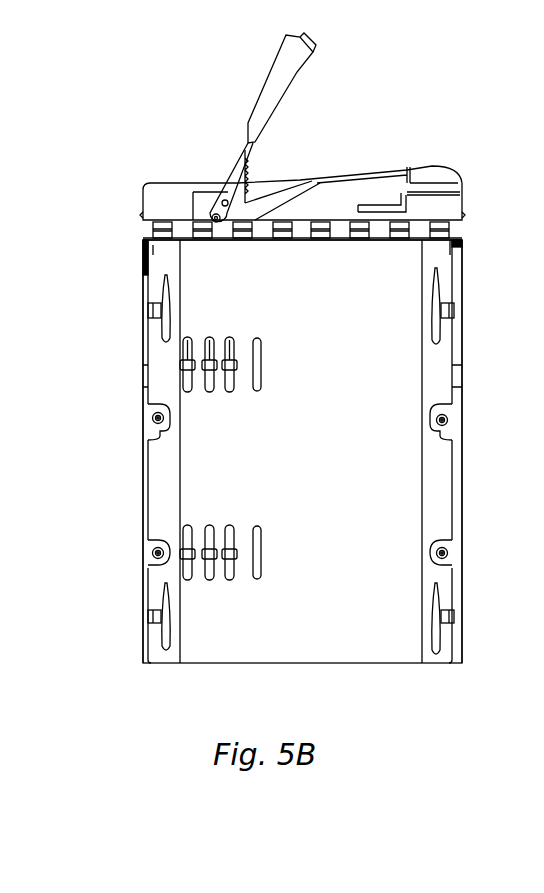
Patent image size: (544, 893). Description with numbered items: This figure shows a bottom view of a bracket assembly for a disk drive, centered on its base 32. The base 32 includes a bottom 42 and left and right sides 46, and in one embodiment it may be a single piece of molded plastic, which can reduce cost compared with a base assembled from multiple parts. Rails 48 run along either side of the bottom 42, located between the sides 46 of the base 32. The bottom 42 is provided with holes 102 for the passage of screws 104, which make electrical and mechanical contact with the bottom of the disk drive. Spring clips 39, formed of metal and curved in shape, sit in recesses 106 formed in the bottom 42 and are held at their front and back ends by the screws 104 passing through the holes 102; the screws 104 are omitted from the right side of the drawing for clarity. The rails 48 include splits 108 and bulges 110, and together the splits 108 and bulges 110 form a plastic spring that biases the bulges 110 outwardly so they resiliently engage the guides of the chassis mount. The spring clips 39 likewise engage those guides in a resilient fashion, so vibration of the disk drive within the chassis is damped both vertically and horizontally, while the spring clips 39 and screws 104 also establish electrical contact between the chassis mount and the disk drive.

The base 32 is at (387, 639).
The spring clips 39 is at (153, 413).
The bottom 42 is at (280, 657).
The left and right sides 46 is at (142, 262).
The rails 48 is at (160, 492).
The holes 102 is at (450, 420).
The screws 104 is at (150, 422).
The recesses 106 is at (148, 433).
The splits 108 is at (167, 325).
The bulges 110 is at (148, 308).